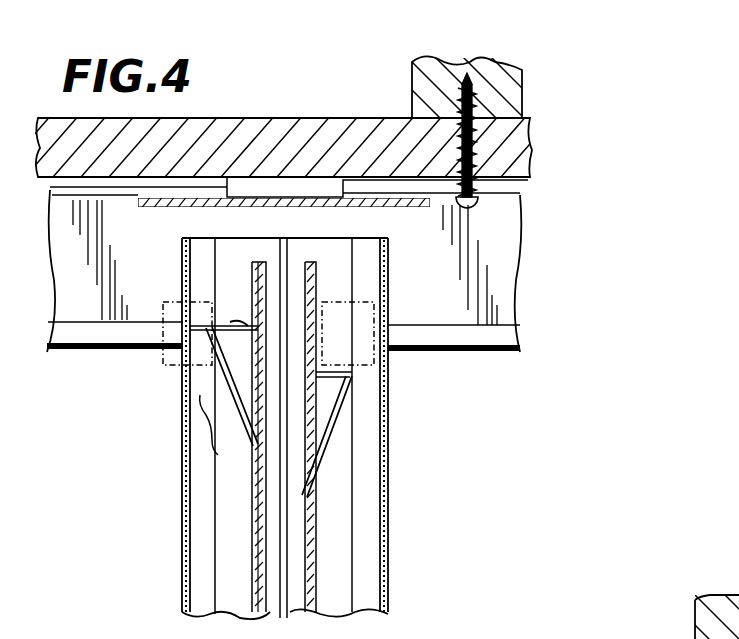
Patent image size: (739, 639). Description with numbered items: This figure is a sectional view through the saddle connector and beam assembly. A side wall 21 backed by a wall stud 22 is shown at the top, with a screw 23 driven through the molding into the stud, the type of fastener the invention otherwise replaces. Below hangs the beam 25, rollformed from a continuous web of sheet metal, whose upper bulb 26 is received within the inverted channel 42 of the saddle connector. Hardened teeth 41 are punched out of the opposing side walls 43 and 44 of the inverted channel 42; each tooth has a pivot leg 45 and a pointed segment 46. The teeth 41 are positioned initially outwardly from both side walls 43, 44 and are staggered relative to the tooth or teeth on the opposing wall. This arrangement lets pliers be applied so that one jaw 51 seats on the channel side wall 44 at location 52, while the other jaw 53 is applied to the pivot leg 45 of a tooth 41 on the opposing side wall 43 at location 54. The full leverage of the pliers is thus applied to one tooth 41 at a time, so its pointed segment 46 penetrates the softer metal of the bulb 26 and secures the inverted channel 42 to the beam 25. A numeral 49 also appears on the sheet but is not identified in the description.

The side wall 21 is at (250, 118).
The wall stud 22 is at (522, 95).
The screws 23 is at (412, 82).
The beam 25 is at (388, 518).
The bulb 26 is at (310, 588).
The teeth 41 is at (222, 385).
The inverted channel 42 is at (252, 552).
The side wall 43 is at (252, 517).
The side wall 44 is at (316, 513).
The pivot leg 45 is at (212, 440).
The pointed segment 46 is at (238, 326).
The connector 49 is at (509, 627).
The jaw 51 is at (400, 312).
The location 52 is at (388, 373).
The jaw 53 is at (150, 366).
The location 54 is at (190, 345).